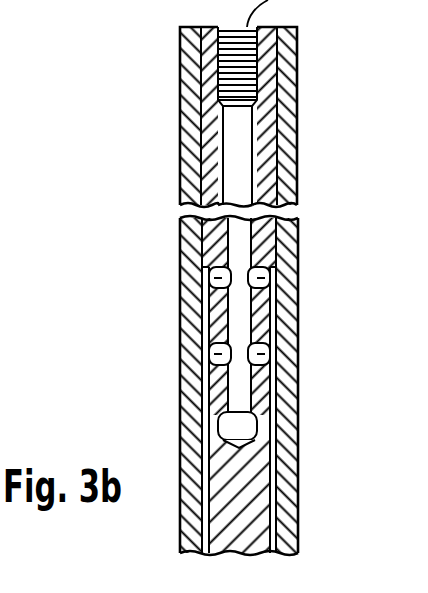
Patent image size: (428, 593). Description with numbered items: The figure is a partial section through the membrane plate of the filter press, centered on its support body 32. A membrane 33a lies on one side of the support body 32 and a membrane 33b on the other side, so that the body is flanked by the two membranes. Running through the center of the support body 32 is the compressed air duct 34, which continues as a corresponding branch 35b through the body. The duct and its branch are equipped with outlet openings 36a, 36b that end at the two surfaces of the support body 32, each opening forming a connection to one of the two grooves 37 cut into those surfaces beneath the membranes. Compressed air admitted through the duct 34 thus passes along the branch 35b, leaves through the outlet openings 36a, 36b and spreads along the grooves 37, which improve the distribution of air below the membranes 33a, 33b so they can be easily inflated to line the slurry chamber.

The support body 32 is at (250, 497).
The membrane 33a is at (185, 173).
The membrane 33b is at (283, 183).
The compressed air duct 34 is at (233, 132).
The branch 35b is at (237, 316).
The outlet opening 36a is at (210, 283).
The outlet opening 36b is at (266, 282).
The groove 37 is at (204, 322).